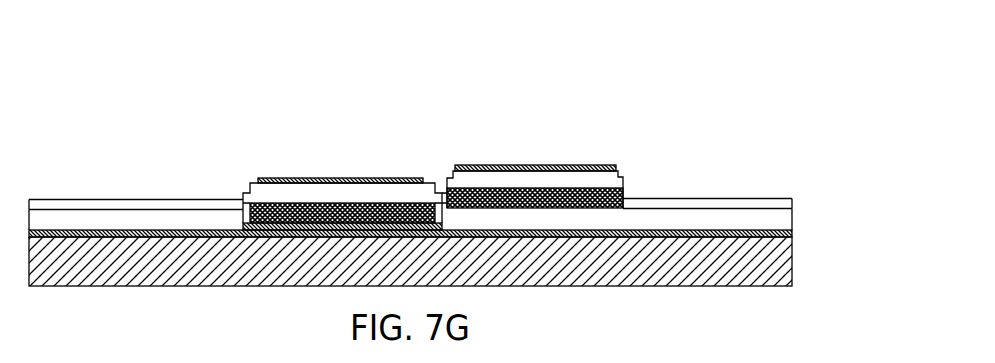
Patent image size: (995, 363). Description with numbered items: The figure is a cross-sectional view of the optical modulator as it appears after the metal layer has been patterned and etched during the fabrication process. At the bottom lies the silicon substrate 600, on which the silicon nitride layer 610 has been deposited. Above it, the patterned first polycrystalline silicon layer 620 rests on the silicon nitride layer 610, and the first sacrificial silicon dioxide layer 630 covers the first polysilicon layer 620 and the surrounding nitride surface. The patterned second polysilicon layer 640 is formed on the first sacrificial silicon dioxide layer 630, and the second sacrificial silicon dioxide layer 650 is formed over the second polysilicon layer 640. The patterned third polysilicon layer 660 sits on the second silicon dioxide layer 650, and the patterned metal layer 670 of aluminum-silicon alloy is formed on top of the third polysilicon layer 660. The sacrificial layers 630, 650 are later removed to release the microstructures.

The silicon substrate 600 is at (775, 272).
The silicon nitride layer 610 is at (792, 235).
The first polycrystalline silicon layer 620 is at (267, 225).
The first sacrificial silicon dioxide layer 630 is at (123, 222).
The second polysilicon layer 640 is at (337, 205).
The second sacrificial silicon dioxide layer 650 is at (180, 205).
The third polysilicon layer 660 is at (385, 193).
The metal layer 670 is at (300, 182).